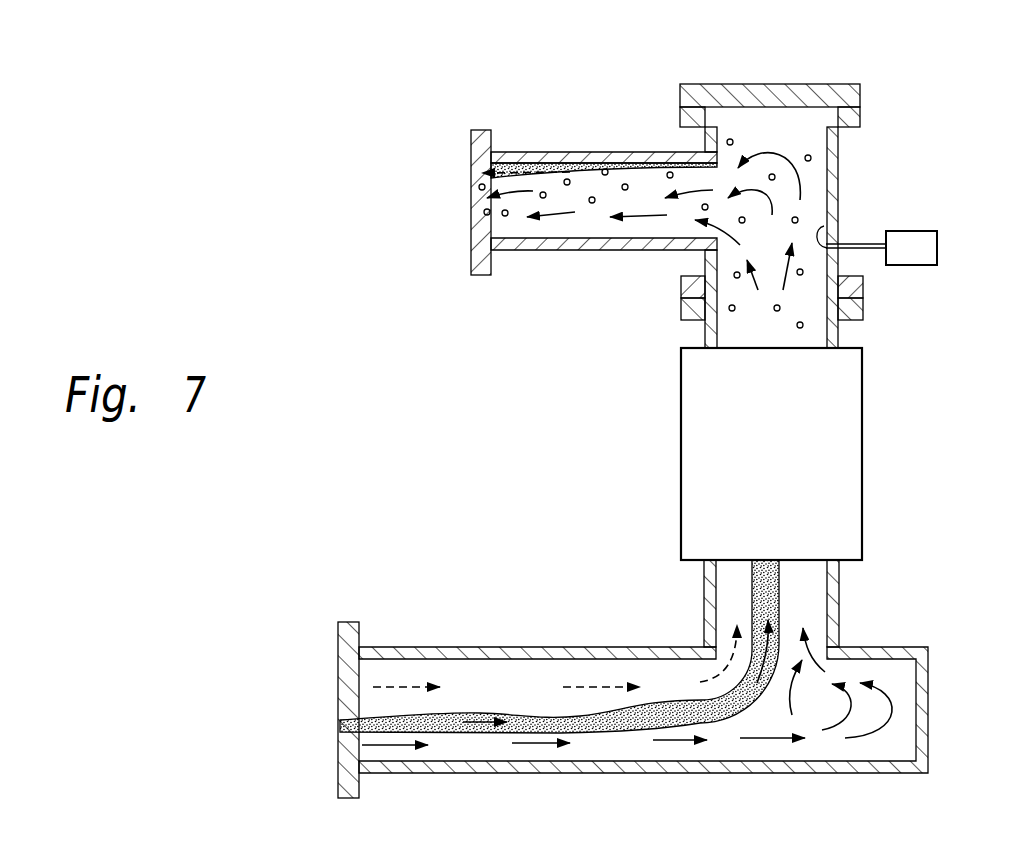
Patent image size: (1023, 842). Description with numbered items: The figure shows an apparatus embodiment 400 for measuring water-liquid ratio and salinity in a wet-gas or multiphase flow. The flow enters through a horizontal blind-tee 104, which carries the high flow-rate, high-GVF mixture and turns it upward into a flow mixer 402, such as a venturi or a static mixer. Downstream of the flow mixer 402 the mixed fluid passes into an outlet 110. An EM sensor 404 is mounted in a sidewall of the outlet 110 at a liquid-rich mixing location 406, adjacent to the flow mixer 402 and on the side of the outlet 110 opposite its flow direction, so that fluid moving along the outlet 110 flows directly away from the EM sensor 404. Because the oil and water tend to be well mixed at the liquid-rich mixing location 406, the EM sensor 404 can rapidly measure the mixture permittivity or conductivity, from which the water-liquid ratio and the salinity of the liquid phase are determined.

The apparatus embodiment 400 is at (450, 50).
The outlet 110 is at (557, 152).
The horizontal blind-tee 104 is at (493, 645).
The flow mixer 402 is at (862, 447).
The EM sensor 404 is at (937, 242).
The liquid-rich mixing location 406 is at (822, 240).